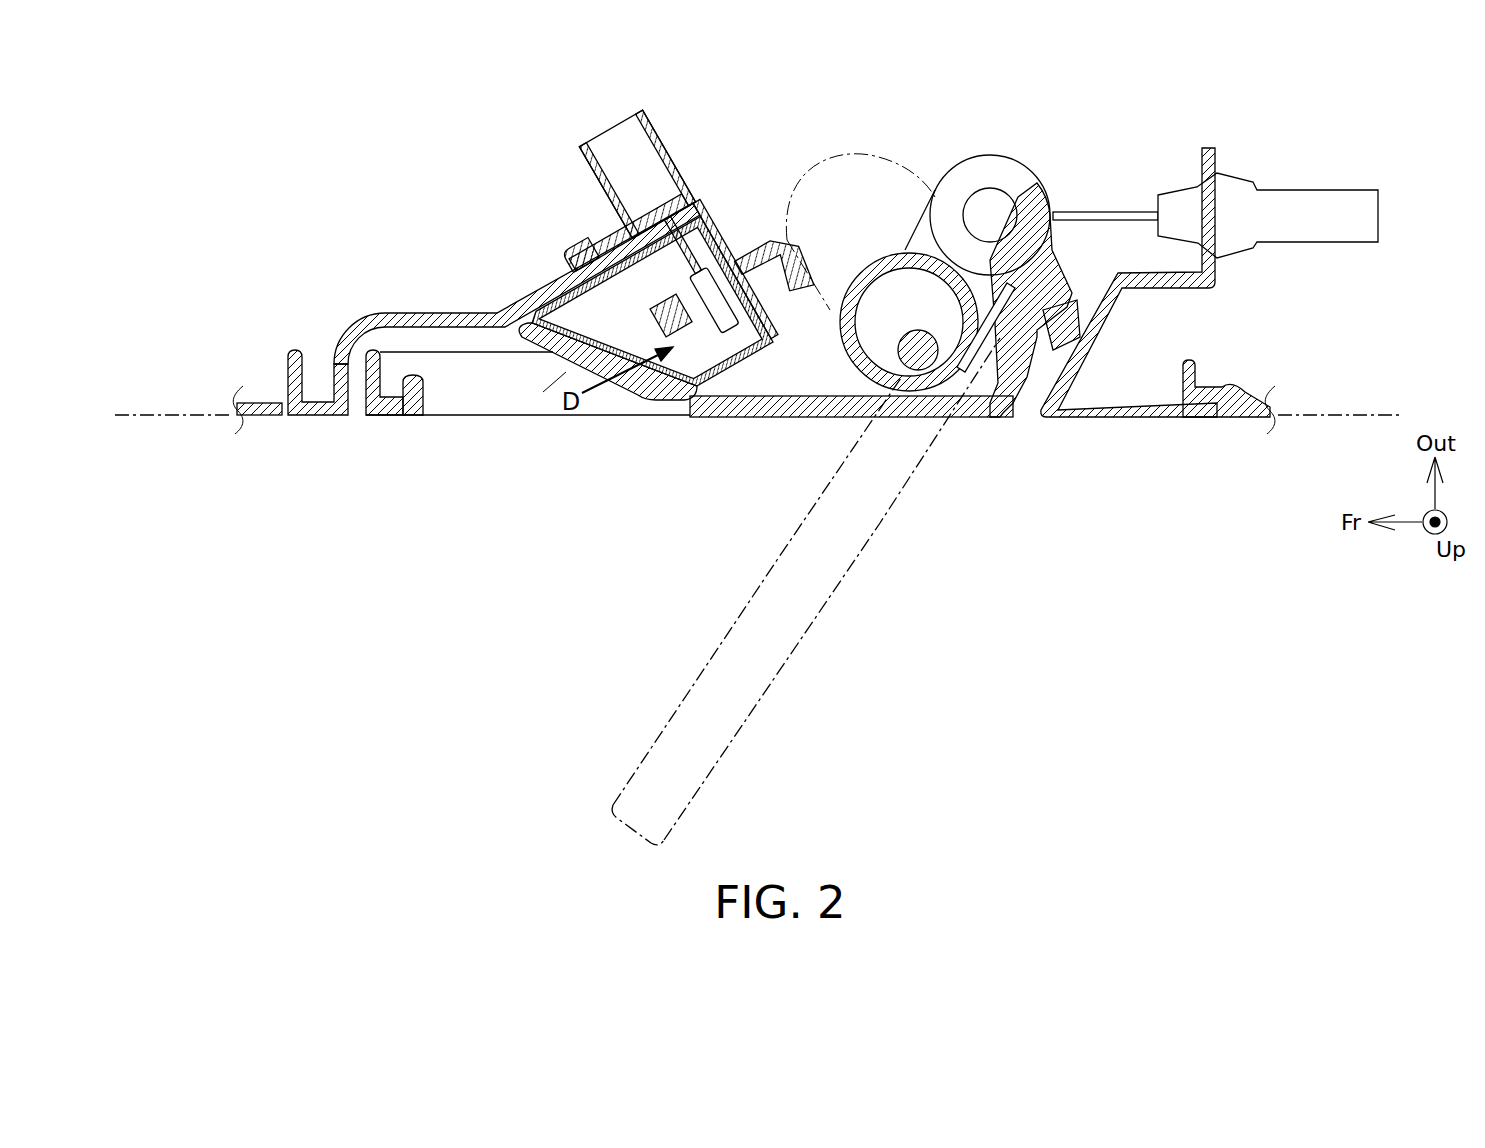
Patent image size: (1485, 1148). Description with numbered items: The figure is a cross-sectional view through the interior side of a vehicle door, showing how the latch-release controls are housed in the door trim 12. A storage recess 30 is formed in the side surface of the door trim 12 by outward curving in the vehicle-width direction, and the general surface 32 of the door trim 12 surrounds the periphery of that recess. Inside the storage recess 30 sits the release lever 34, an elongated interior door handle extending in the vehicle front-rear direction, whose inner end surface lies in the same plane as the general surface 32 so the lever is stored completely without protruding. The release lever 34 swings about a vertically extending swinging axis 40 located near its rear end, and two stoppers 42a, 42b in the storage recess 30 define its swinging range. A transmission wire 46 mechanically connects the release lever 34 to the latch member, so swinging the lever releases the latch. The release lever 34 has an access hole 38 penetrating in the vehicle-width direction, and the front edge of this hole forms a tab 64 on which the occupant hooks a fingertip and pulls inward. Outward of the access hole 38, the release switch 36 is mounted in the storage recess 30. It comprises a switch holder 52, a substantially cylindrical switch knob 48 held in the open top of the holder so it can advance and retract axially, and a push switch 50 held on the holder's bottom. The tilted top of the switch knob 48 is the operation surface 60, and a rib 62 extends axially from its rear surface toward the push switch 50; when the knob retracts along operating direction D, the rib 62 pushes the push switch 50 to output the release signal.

The door trim 12 is at (400, 312).
The storage recess 30 is at (346, 375).
The general surface 32 is at (185, 417).
The release lever 34 is at (770, 418).
The release switch 36 is at (568, 370).
The access hole 38 is at (430, 412).
The swinging axis 40 is at (957, 415).
The stopper 42a is at (1078, 340).
The stopper 42b is at (803, 260).
The transmission wire 46 is at (1087, 212).
The switch knob 48 is at (628, 385).
The push switch 50 is at (697, 292).
The switch holder 52 is at (757, 307).
The operation surface 60 is at (560, 363).
The rib 62 is at (555, 292).
The tab 64 is at (387, 415).